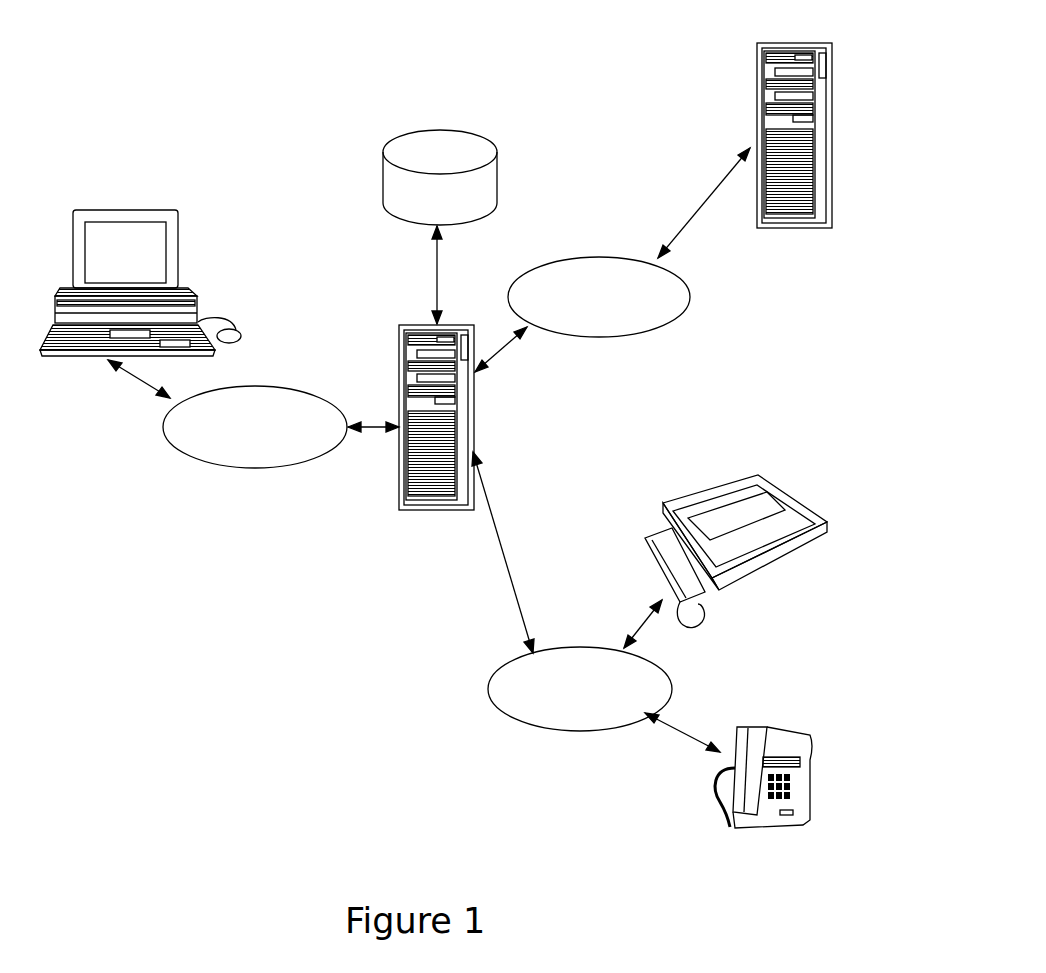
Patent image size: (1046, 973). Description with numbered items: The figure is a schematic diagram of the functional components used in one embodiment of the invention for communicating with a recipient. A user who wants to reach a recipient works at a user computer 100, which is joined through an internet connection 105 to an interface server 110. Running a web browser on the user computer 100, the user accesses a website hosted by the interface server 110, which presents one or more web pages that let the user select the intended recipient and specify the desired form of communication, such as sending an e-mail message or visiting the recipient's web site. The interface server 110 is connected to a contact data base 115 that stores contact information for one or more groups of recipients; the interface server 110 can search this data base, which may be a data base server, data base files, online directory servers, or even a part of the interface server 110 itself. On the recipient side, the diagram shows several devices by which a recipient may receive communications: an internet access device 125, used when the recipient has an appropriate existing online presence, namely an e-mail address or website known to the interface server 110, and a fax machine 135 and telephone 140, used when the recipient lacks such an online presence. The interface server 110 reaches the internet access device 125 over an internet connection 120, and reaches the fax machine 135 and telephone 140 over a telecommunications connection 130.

The user computer 100 is at (117, 209).
The internet connection 105 is at (253, 386).
The interface server 110 is at (420, 325).
The contact data base 115 is at (440, 129).
The internet connection 120 is at (570, 257).
The internet access device 125 is at (795, 43).
The telecommunications connection 130 is at (490, 690).
The fax machine 135 is at (713, 490).
The telephone 140 is at (716, 786).